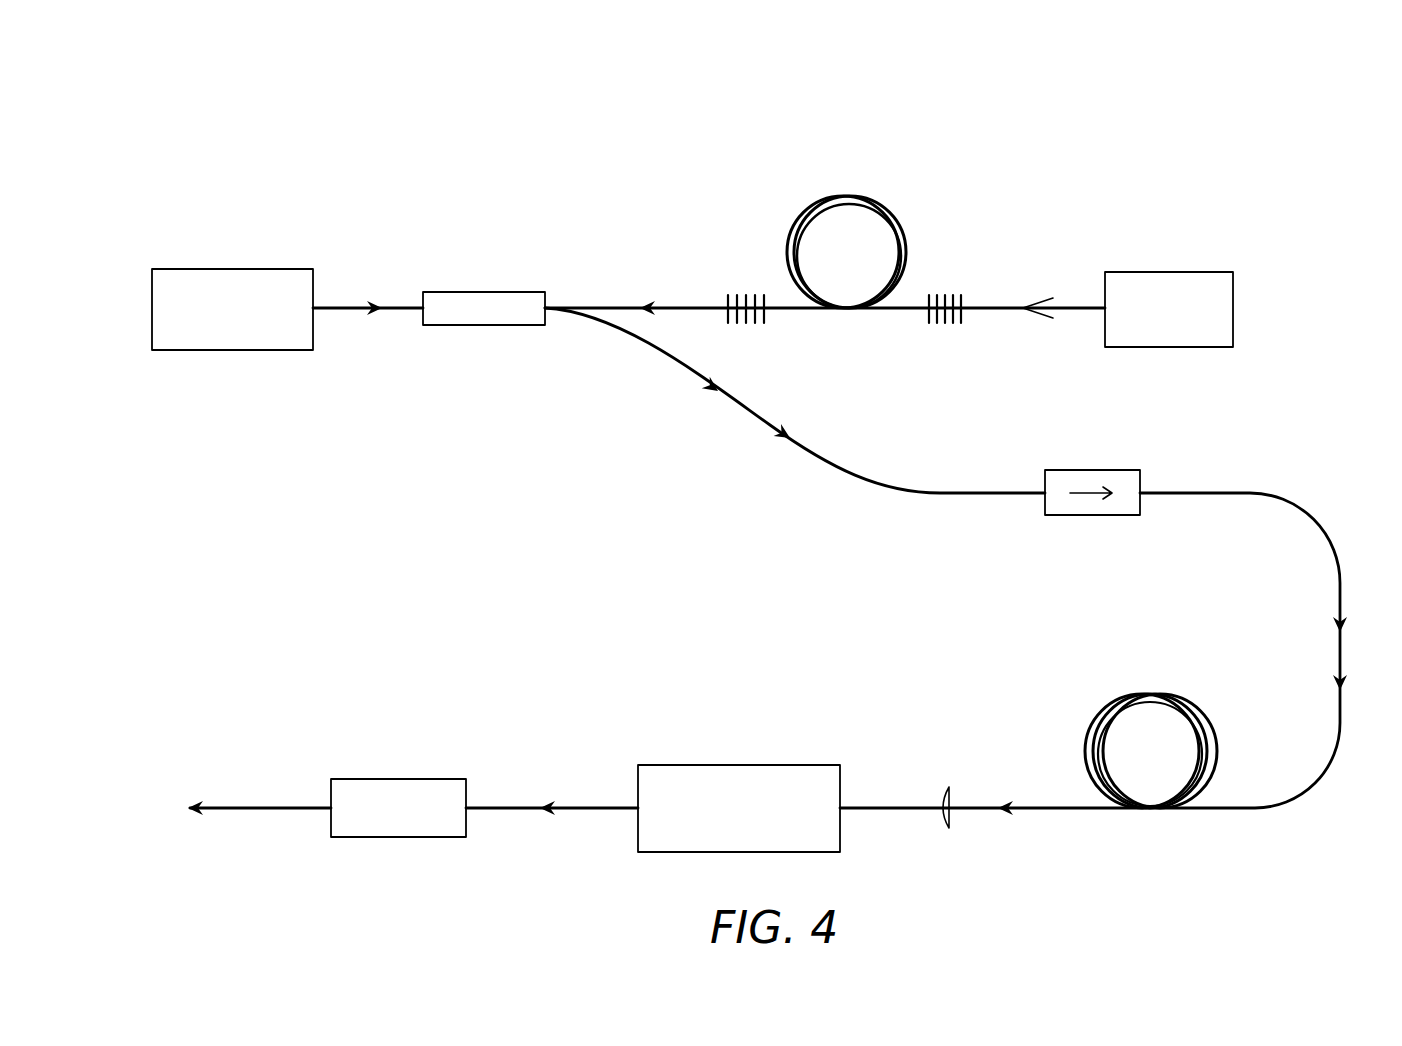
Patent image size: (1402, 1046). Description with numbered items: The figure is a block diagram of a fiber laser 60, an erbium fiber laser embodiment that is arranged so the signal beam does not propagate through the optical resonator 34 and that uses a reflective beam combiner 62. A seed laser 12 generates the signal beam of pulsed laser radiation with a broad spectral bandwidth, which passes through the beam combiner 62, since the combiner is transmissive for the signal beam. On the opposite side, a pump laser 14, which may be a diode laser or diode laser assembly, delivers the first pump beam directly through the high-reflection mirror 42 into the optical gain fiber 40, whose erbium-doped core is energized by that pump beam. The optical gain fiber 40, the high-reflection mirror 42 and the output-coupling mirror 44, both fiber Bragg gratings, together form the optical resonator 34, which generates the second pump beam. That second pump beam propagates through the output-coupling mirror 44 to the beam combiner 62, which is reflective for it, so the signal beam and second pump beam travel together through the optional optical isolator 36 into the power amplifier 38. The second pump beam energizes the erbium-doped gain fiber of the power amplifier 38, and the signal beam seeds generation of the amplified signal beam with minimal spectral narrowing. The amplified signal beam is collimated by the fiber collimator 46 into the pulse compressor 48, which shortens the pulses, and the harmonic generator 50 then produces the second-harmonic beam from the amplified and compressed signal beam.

The seed laser 12 is at (203, 270).
The pump laser 14 is at (1205, 272).
The optical resonator 34 is at (841, 207).
The optical isolator 36 is at (1073, 478).
The power amplifier 38 is at (1133, 692).
The optical gain fiber 40 is at (870, 196).
The high-reflection mirror 42 is at (945, 294).
The output-coupling mirror 44 is at (746, 294).
The fiber collimator 46 is at (948, 786).
The pulse compressor 48 is at (683, 769).
The harmonic generator 50 is at (372, 779).
The fiber laser 60 is at (784, 452).
The reflective beam combiner 62 is at (468, 320).